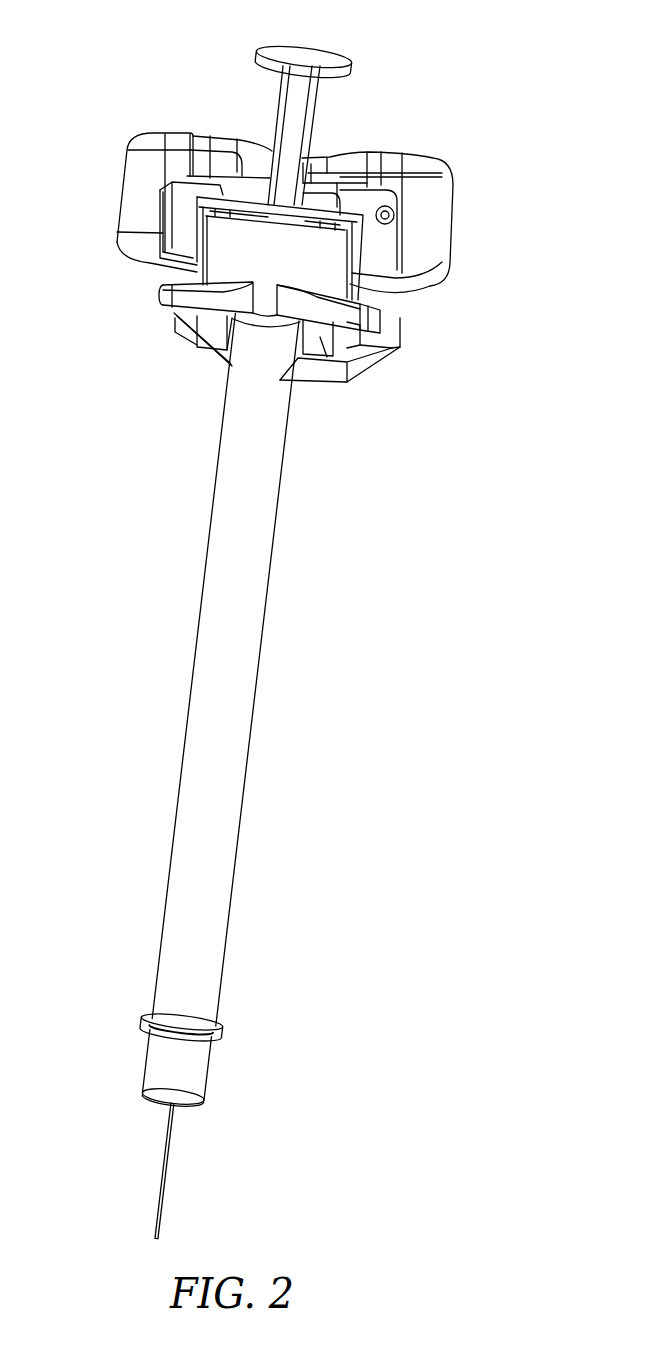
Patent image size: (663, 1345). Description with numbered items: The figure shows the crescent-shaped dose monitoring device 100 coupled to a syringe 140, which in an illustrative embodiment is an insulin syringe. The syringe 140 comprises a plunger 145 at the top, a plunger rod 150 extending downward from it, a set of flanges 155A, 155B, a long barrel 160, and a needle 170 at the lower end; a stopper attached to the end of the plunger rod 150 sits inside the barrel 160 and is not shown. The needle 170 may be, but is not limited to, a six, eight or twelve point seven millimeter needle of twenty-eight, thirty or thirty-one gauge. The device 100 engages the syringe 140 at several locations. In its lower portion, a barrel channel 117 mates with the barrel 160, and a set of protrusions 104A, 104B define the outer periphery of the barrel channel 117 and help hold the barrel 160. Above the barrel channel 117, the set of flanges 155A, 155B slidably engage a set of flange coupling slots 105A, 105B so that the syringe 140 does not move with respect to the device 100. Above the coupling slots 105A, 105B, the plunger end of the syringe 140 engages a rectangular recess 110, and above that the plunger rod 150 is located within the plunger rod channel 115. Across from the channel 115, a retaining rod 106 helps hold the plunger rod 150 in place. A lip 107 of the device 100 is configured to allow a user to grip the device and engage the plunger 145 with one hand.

The dose monitoring device 100 is at (458, 250).
The protrusion 104A is at (207, 330).
The protrusion 104B is at (325, 355).
The flange coupling slot 105A is at (200, 322).
The flange coupling slot 105B is at (390, 340).
The retaining rod 106 is at (317, 210).
The lip 107 is at (302, 367).
The rectangular recess 110 is at (212, 242).
The plunger rod channel 115 is at (303, 193).
The barrel channel 117 is at (230, 368).
The syringe 140 is at (260, 652).
The plunger 145 is at (283, 53).
The plunger rod 150 is at (290, 90).
The flange 155A is at (172, 297).
The flange 155B is at (347, 322).
The barrel 160 is at (218, 875).
The needle 170 is at (170, 1173).